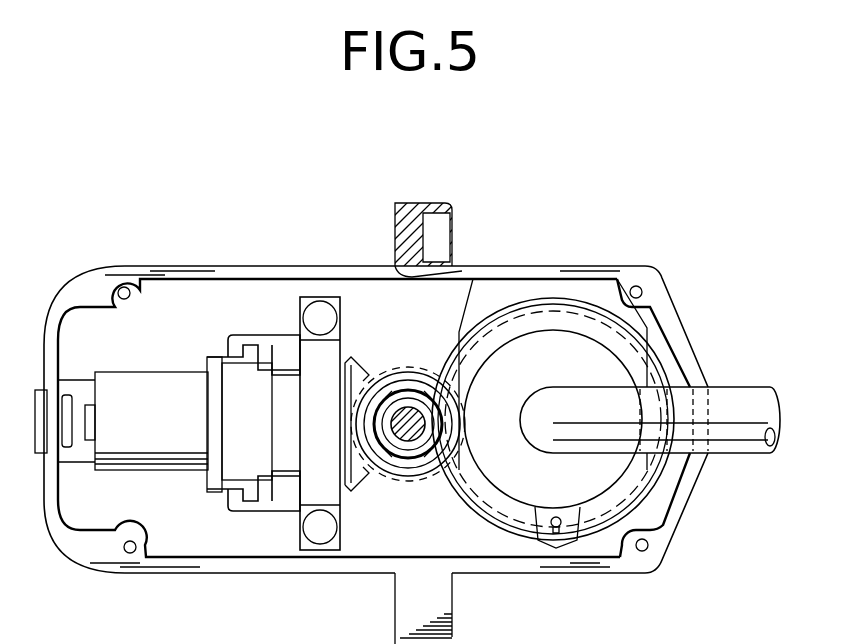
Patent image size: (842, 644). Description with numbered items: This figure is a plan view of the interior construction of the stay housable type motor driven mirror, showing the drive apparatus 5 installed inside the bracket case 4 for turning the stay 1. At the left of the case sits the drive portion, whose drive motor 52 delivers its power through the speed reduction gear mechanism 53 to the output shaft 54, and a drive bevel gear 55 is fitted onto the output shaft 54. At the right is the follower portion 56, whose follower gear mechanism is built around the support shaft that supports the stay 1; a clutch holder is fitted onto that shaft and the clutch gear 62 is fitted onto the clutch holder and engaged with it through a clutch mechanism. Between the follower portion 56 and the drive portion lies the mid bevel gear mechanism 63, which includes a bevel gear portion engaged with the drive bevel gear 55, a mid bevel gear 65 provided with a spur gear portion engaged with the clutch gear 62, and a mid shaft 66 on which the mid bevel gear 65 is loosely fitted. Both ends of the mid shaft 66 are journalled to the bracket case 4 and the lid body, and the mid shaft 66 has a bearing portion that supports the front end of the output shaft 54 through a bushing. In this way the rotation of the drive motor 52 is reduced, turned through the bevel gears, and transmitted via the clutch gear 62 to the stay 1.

The stay 1 is at (731, 398).
The bracket case 4 is at (573, 264).
The drive apparatus 5 is at (190, 325).
The drive motor 52 is at (140, 447).
The speed reduction gear mechanism 53 is at (243, 455).
The output shaft 54 is at (374, 372).
The drive bevel gear 55 is at (368, 477).
The follower portion 56 is at (633, 279).
The clutch gear 62 is at (535, 497).
The mid bevel gear mechanism 63 is at (396, 352).
The mid bevel gear 65 is at (428, 472).
The mid shaft 66 is at (418, 392).